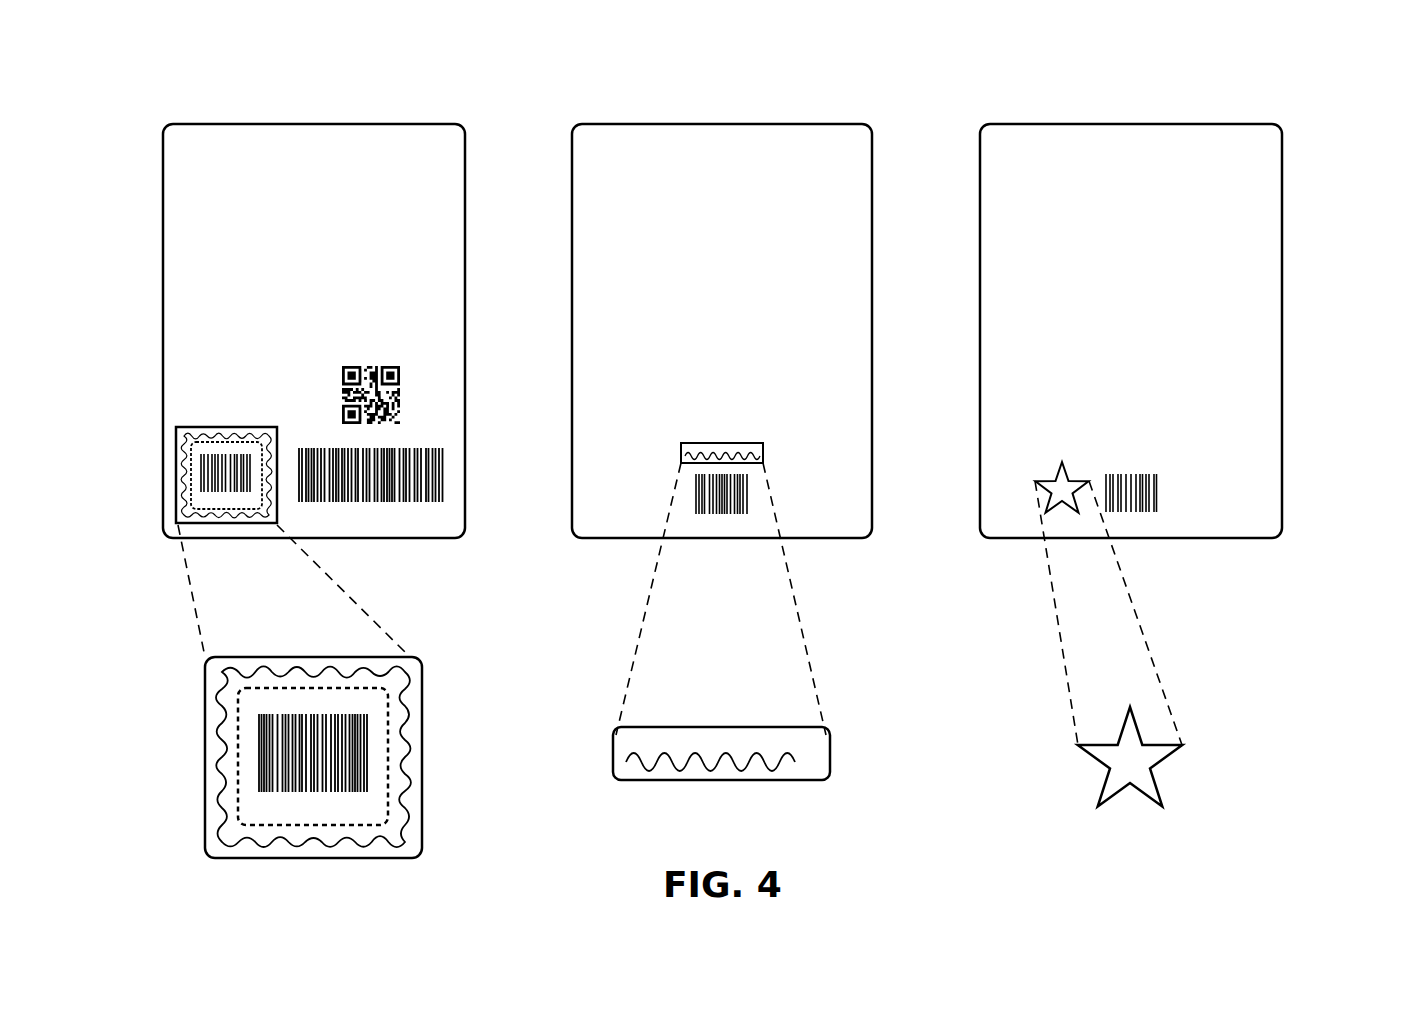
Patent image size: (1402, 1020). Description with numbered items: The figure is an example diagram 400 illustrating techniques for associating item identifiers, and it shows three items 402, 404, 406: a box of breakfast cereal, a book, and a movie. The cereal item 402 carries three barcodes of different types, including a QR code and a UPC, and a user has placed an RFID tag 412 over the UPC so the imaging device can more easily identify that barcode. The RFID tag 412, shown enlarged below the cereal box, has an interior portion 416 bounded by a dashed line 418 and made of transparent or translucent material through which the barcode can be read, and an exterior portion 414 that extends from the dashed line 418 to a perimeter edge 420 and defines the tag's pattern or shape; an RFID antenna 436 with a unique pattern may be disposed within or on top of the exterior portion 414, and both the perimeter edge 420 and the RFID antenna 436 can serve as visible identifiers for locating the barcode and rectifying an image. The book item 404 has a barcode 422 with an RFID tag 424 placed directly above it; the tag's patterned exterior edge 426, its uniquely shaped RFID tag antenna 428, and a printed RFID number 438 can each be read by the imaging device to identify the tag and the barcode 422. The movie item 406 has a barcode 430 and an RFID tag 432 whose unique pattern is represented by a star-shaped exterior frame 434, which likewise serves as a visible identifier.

The diagram 400 is at (1282, 92).
The item 402 is at (310, 124).
The item 404 is at (722, 124).
The item 406 is at (1130, 124).
The RFID tag 412 is at (218, 415).
The exterior portion 414 is at (414, 838).
The interior portion 416 is at (378, 757).
The dashed line 418 is at (238, 722).
The perimeter edge 420 is at (208, 755).
The barcode 422 is at (697, 515).
The RFID tag 424 is at (717, 428).
The exterior edge 426 is at (776, 778).
The RFID tag antenna 428 is at (672, 770).
The barcode 430 is at (1128, 513).
The RFID tag 432 is at (1035, 462).
The exterior frame 434 is at (1115, 795).
The RFID antenna 436 is at (222, 815).
The RFID number 438 is at (818, 740).